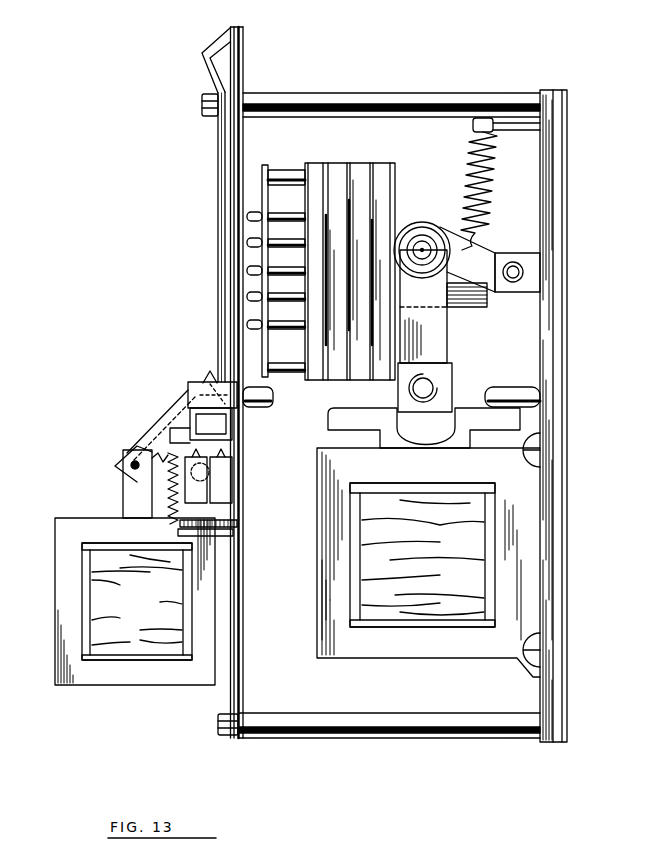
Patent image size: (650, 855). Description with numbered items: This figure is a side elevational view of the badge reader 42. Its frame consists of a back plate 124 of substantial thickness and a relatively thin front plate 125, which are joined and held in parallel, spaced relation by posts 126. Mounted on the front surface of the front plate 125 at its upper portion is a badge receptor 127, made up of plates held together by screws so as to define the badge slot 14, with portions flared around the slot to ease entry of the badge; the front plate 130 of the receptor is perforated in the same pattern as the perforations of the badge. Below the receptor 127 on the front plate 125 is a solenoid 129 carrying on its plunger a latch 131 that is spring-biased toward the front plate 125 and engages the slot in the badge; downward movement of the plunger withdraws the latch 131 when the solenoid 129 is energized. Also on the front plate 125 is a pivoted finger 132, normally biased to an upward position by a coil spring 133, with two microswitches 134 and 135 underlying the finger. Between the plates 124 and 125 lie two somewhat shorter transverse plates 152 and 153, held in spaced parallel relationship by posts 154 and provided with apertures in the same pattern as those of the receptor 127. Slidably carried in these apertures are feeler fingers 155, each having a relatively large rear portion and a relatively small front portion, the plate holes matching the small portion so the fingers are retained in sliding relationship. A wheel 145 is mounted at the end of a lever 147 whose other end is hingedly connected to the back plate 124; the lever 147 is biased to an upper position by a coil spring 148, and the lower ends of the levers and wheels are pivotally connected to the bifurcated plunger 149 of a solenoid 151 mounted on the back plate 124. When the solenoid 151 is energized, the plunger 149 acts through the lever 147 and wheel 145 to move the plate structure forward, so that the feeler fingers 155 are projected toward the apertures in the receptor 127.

The badge slot 14 is at (235, 46).
The badge reader 42 is at (378, 735).
The back plate 124 is at (567, 495).
The front plate 125 is at (240, 740).
The posts 126 is at (402, 93).
The badge receptor 127 is at (215, 60).
The solenoid 129 is at (70, 596).
The front plate of the receptor 130 is at (221, 222).
The latch 131 is at (210, 373).
The pivoted finger 132 is at (200, 400).
The coil spring 133 is at (168, 496).
The microswitch 134 is at (232, 493).
The microswitch 135 is at (200, 510).
The wheel 145 is at (412, 222).
The lever 147 is at (490, 262).
The coil spring 148 is at (488, 196).
The bifurcated plunger 149 is at (440, 345).
The solenoid 151 is at (410, 660).
The transverse plate 152 is at (357, 163).
The transverse plate 153 is at (265, 165).
The posts 154 is at (295, 172).
The feeler fingers 155 is at (248, 324).